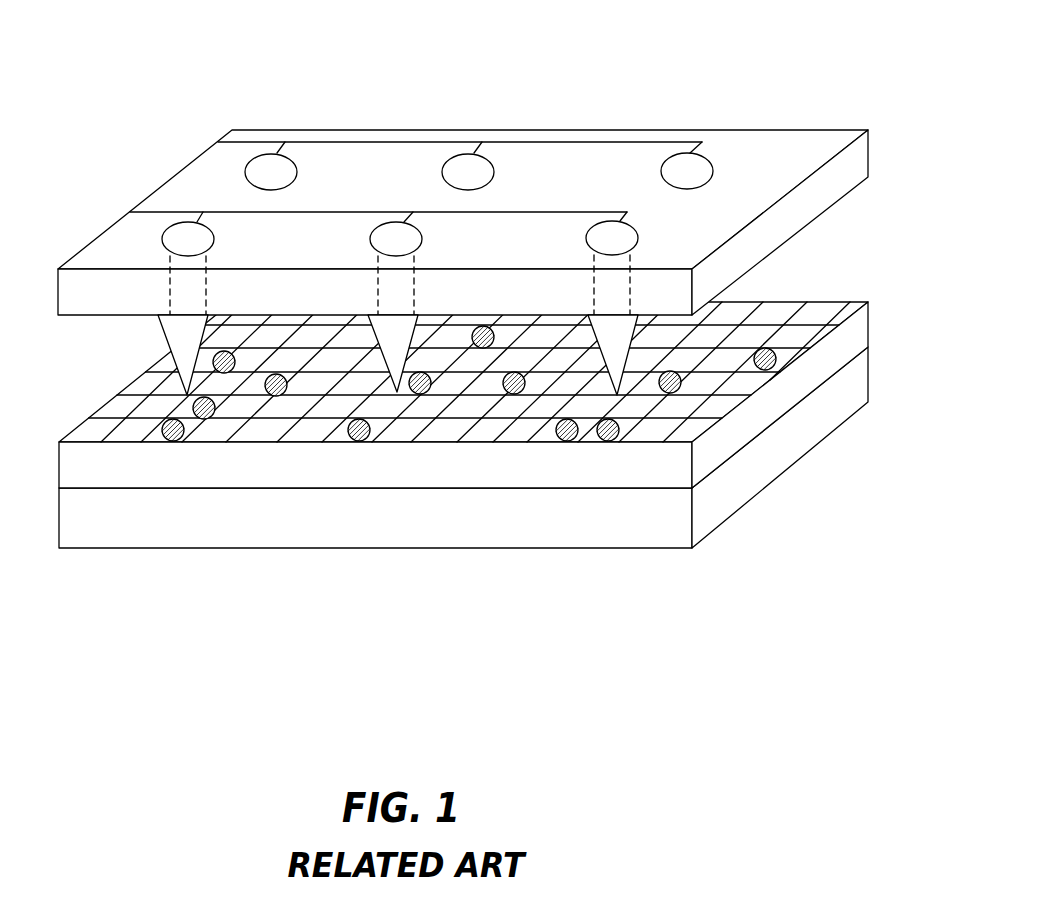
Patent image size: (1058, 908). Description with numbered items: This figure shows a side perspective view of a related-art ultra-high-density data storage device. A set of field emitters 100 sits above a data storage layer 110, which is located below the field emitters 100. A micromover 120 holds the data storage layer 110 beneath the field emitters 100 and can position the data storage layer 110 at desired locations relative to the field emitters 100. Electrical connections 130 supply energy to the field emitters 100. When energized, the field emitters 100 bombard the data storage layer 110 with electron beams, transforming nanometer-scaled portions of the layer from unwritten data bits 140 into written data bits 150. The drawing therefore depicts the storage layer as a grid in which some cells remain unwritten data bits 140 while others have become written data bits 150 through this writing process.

The field emitters 100 is at (178, 345).
The data storage layer 110 is at (759, 410).
The micromover 120 is at (110, 528).
The electrical connections 130 is at (620, 142).
The unwritten data bits 140 is at (432, 407).
The written data bits 150 is at (180, 440).